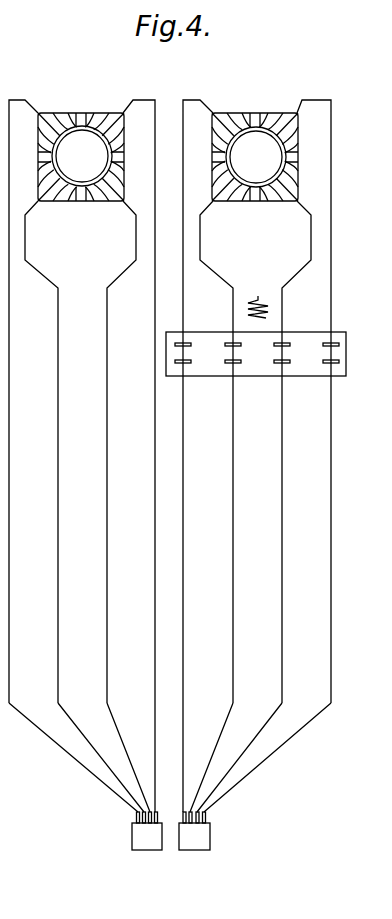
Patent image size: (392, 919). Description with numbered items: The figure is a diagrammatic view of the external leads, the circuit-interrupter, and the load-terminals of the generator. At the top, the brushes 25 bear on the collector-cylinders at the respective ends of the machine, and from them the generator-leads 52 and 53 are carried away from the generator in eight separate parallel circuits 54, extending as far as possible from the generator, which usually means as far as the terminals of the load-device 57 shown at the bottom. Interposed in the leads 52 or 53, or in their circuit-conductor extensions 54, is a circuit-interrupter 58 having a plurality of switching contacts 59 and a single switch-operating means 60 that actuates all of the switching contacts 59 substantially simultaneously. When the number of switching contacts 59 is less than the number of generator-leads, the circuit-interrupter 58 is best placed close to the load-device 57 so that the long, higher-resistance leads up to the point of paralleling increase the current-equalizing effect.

The brushes 25 is at (82, 203).
The generator-leads 52 is at (283, 112).
The generator-leads 53 is at (101, 112).
The parallel circuits 54 is at (58, 365).
The load-device 57 is at (180, 847).
The circuit-interrupter 58 is at (295, 332).
The switching contacts 59 is at (325, 347).
The switch-operating means 60 is at (258, 296).